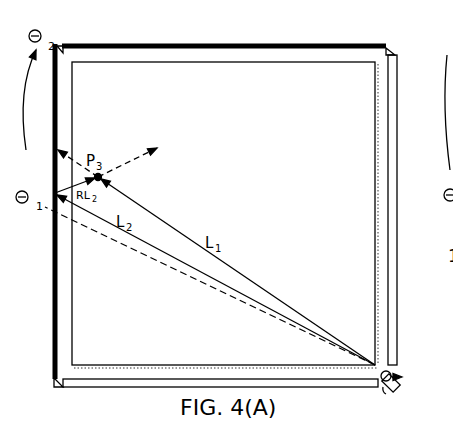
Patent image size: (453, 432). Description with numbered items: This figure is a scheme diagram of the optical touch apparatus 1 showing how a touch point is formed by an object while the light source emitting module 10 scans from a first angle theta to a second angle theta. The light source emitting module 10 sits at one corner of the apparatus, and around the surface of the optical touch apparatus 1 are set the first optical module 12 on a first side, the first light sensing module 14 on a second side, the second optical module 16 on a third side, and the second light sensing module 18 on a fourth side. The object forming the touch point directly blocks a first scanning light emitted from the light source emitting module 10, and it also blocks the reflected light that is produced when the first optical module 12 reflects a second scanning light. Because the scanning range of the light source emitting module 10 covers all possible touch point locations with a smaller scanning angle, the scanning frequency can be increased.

The optical touch apparatus 1 is at (296, 39).
The light source emitting module 10 is at (404, 378).
The first optical module 12 is at (53, 266).
The first light sensing module 14 is at (398, 258).
The second optical module 16 is at (104, 46).
The second light sensing module 18 is at (146, 383).